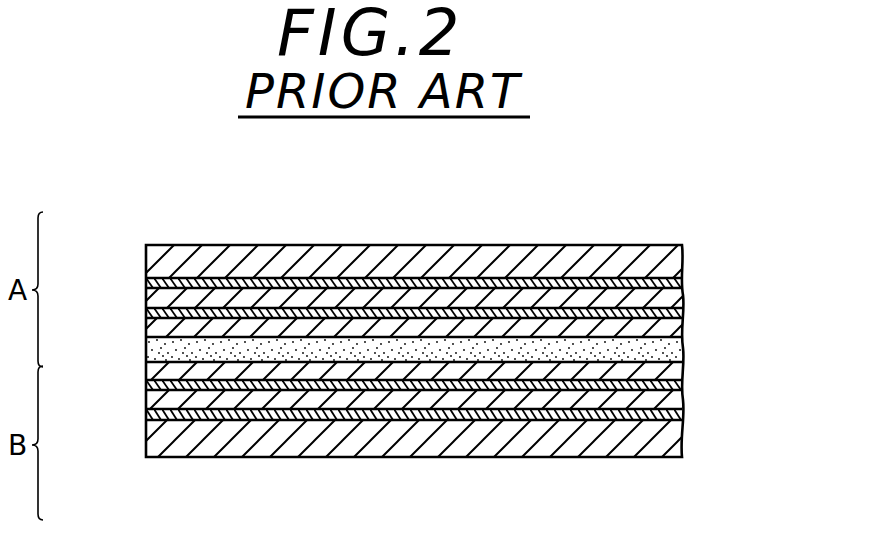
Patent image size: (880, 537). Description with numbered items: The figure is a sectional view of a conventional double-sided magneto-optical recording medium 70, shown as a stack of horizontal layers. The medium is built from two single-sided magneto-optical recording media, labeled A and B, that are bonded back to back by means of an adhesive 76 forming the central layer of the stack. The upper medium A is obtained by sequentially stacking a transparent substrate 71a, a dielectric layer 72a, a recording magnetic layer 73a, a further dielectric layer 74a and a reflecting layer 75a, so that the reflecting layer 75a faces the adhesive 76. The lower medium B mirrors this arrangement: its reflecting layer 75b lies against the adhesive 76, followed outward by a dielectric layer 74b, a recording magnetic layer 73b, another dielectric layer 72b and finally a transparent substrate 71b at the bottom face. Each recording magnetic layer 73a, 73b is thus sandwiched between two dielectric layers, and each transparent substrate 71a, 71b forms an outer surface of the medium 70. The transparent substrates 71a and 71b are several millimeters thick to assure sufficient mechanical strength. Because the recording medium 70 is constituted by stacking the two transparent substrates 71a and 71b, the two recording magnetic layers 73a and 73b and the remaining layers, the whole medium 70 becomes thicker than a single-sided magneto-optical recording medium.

The double-sided magneto-optical recording medium 70 is at (495, 224).
The transparent substrate 71a is at (146, 262).
The dielectric layer 72a is at (146, 283).
The recording magnetic layer 73a is at (146, 298).
The dielectric layer 74a is at (146, 313).
The reflecting layer 75a is at (146, 327).
The adhesive 76 is at (666, 356).
The reflecting layer 75b is at (146, 372).
The dielectric layer 74b is at (146, 386).
The recording magnetic layer 73b is at (146, 402).
The dielectric layer 72b is at (146, 416).
The transparent substrate 71b is at (146, 440).